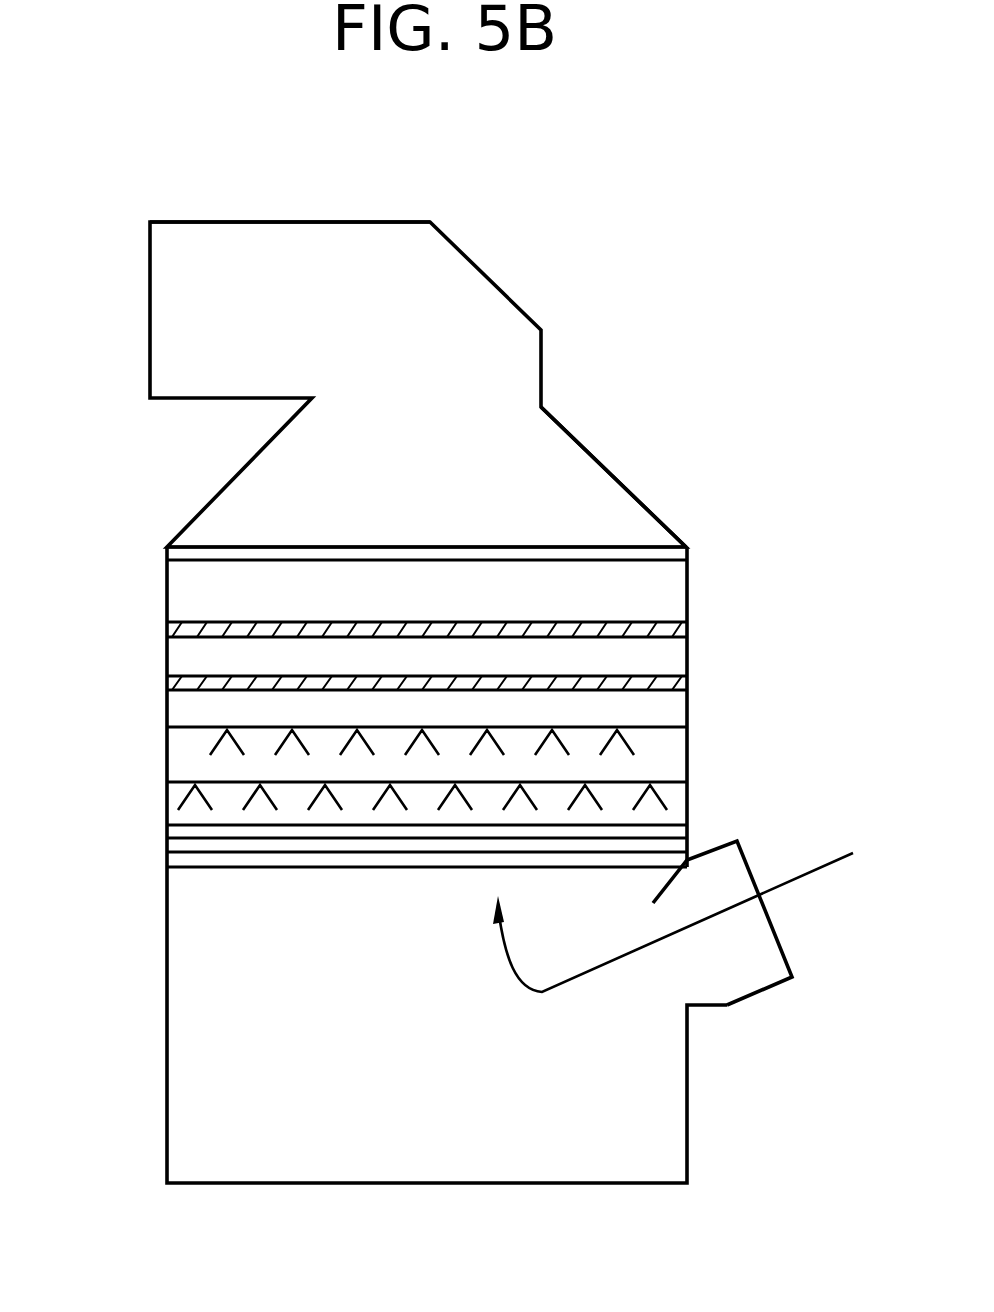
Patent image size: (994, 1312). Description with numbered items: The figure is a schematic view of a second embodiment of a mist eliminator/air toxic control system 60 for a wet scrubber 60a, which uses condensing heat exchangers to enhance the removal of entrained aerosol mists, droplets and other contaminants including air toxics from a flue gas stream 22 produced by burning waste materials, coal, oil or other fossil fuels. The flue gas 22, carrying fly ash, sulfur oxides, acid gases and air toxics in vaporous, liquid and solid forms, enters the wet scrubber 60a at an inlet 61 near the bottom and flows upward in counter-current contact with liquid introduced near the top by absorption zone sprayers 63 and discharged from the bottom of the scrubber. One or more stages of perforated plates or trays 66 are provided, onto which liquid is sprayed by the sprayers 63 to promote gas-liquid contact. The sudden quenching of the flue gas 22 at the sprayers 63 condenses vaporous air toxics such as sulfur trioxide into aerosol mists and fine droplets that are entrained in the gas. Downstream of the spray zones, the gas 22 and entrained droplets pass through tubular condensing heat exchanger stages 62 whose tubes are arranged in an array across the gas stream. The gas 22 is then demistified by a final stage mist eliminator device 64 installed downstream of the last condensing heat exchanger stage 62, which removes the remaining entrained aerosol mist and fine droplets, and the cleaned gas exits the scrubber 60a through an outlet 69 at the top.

The flue gas stream 22 is at (690, 927).
The mist eliminator/air toxic control system 60 is at (634, 346).
The wet scrubber 60a is at (592, 449).
The inlet 61 is at (747, 997).
The condensing heat exchanger 62 is at (679, 631).
The absorption zone sprayers 63 is at (650, 787).
The final stage mist eliminator device 64 is at (673, 545).
The perforated plates (trays) 66 is at (188, 860).
The outlet 69 is at (208, 222).